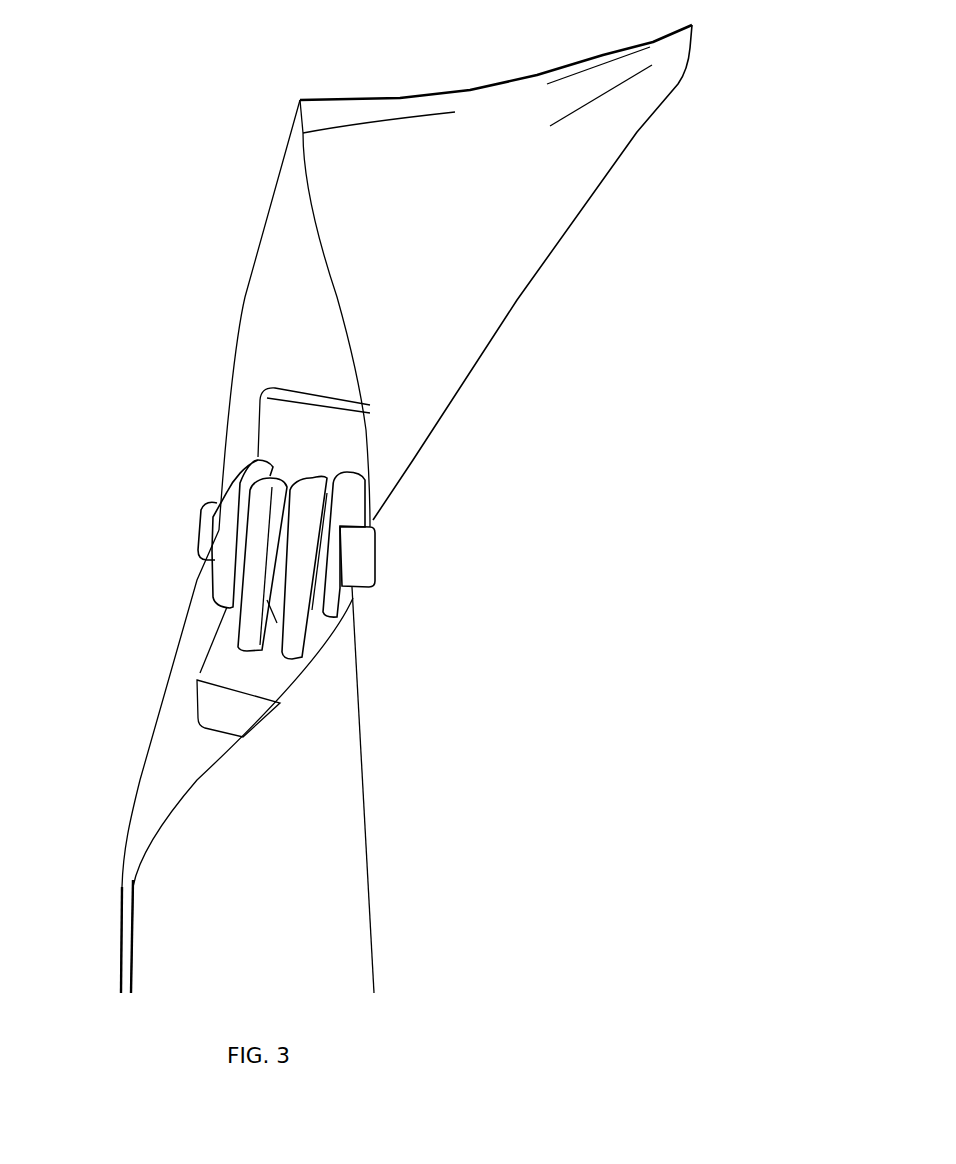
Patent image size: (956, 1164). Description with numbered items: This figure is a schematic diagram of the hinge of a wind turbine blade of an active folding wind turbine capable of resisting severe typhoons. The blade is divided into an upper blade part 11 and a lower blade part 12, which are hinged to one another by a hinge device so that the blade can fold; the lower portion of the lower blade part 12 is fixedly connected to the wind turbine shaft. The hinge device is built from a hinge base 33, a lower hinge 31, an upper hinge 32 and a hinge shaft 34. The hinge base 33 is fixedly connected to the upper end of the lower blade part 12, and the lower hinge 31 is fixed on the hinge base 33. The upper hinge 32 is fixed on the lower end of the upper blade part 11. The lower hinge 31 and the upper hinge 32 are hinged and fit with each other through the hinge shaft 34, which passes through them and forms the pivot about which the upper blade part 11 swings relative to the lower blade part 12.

The upper blade part 11 is at (300, 275).
The lower blade part 12 is at (262, 826).
The lower hinge 31 is at (295, 641).
The upper hinge 32 is at (334, 502).
The hinge base 33 is at (207, 678).
The hinge shaft 34 is at (367, 559).